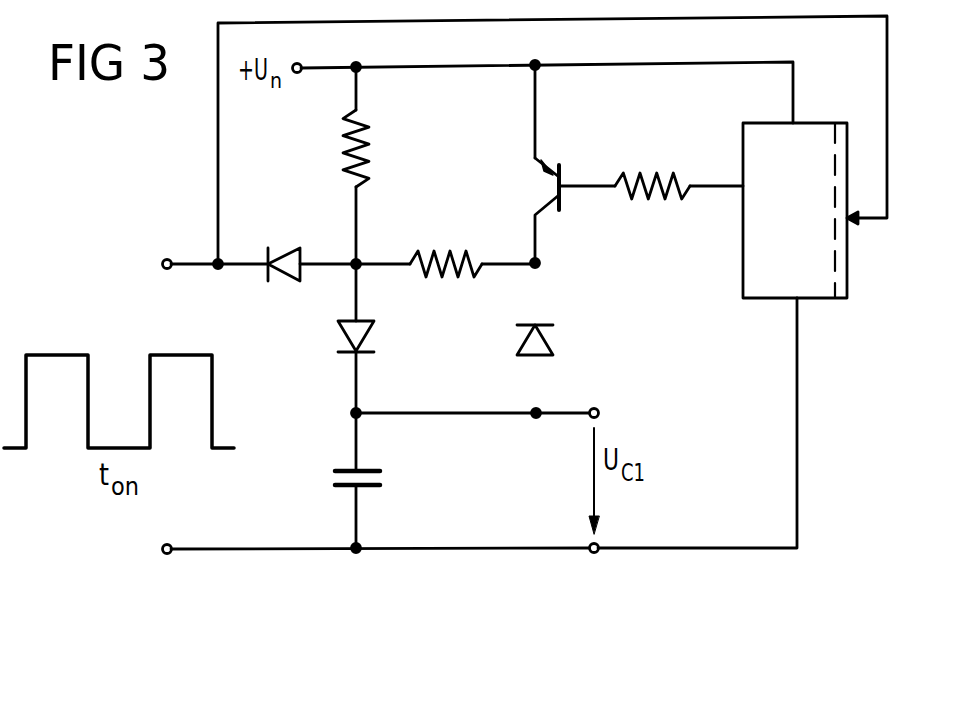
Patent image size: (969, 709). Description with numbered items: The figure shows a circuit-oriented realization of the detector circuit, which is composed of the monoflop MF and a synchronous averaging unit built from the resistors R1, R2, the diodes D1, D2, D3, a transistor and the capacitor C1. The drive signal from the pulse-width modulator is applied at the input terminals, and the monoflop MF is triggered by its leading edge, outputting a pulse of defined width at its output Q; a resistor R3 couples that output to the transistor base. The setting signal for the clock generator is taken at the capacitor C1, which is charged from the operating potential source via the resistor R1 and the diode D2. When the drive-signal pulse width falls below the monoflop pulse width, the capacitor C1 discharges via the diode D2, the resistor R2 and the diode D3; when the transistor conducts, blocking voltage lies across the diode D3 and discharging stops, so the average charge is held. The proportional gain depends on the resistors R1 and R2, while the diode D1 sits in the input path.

The resistor R1 is at (369, 150).
The resistor R2 is at (448, 250).
The resistor R3 is at (655, 178).
The diode D1 is at (275, 249).
The diode D2 is at (366, 340).
The diode D3 is at (548, 340).
The capacitor C1 is at (381, 478).
The monoflop MF is at (758, 250).